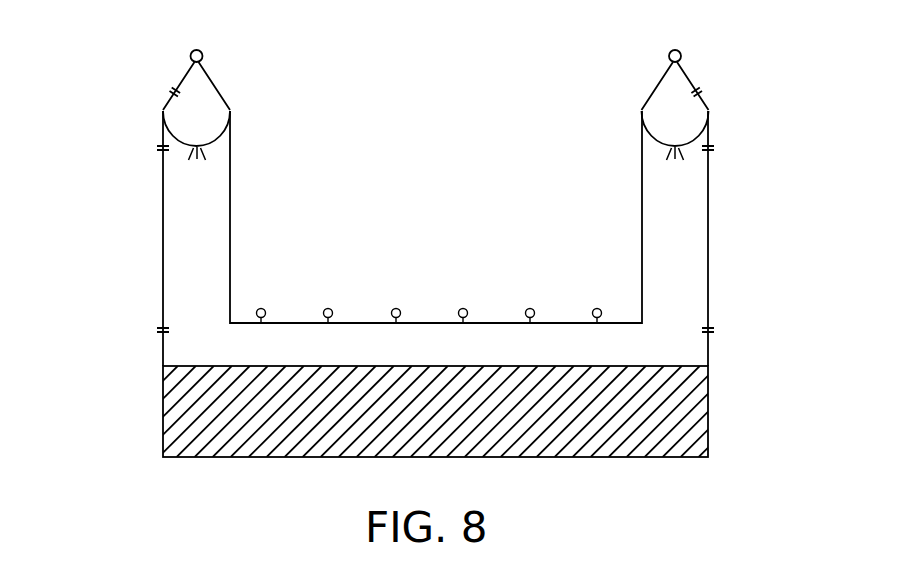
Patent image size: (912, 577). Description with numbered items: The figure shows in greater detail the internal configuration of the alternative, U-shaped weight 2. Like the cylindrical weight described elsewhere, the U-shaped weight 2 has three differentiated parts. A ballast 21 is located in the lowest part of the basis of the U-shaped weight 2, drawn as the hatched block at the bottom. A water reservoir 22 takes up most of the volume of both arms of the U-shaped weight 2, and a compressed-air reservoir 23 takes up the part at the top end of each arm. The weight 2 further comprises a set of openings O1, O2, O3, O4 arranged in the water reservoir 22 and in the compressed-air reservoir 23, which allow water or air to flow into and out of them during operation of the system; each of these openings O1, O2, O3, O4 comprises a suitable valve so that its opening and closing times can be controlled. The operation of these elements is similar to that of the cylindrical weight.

The weight 2 is at (94, 220).
The ballast 21 is at (647, 412).
The water reservoir 22 is at (685, 247).
The compressed-air reservoir 23 is at (200, 107).
The opening O1 is at (434, 80).
The opening O2 is at (434, 148).
The opening O3 is at (434, 331).
The opening O4 is at (436, 167).